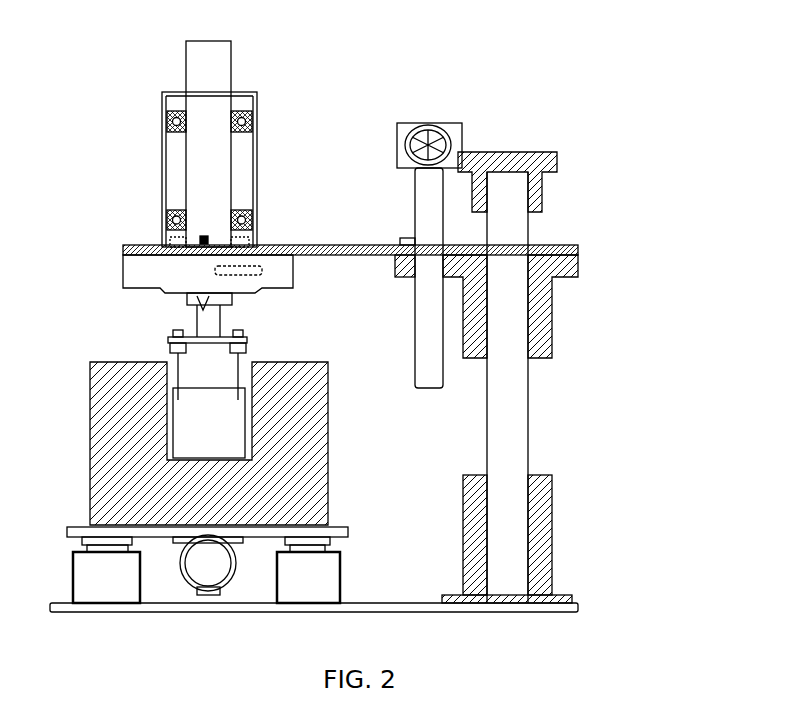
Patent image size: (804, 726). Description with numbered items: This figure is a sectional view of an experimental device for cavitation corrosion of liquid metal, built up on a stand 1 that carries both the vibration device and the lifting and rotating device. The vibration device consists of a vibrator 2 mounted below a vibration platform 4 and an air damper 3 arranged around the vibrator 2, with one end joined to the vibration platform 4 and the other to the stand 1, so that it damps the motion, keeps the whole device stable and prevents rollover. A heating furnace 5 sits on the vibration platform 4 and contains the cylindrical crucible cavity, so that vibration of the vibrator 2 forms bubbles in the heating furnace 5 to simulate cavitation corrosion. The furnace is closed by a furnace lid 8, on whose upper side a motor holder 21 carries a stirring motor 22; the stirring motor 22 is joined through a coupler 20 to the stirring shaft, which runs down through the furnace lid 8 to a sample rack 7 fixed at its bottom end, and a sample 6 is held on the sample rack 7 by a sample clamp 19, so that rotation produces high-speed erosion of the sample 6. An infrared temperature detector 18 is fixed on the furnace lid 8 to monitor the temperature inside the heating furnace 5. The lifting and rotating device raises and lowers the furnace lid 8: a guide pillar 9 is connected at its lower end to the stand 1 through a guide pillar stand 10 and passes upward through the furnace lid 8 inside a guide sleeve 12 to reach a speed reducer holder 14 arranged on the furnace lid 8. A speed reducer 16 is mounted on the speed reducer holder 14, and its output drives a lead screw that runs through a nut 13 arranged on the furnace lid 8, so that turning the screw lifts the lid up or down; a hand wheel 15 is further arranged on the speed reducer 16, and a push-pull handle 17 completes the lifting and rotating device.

The stand 1 is at (357, 610).
The vibrator 2 is at (213, 565).
The air damper 3 is at (318, 583).
The vibration platform 4 is at (317, 532).
The heating furnace 5 is at (280, 440).
The sample 6 is at (238, 377).
The sample rack 7 is at (208, 338).
The furnace lid 8 is at (160, 270).
The guide pillar 9 is at (505, 442).
The guide pillar stand 10 is at (540, 502).
The guide sleeve 12 is at (540, 327).
The nut 13 is at (448, 243).
The speed reducer holder 14 is at (543, 163).
The hand wheel 15 is at (447, 142).
The speed reducer 16 is at (408, 130).
The push-pull handle 17 is at (240, 270).
The infrared temperature detector 18 is at (203, 240).
The sample clamp 19 is at (238, 343).
The coupler 20 is at (245, 218).
The motor holder 21 is at (245, 92).
The stirring motor 22 is at (220, 68).